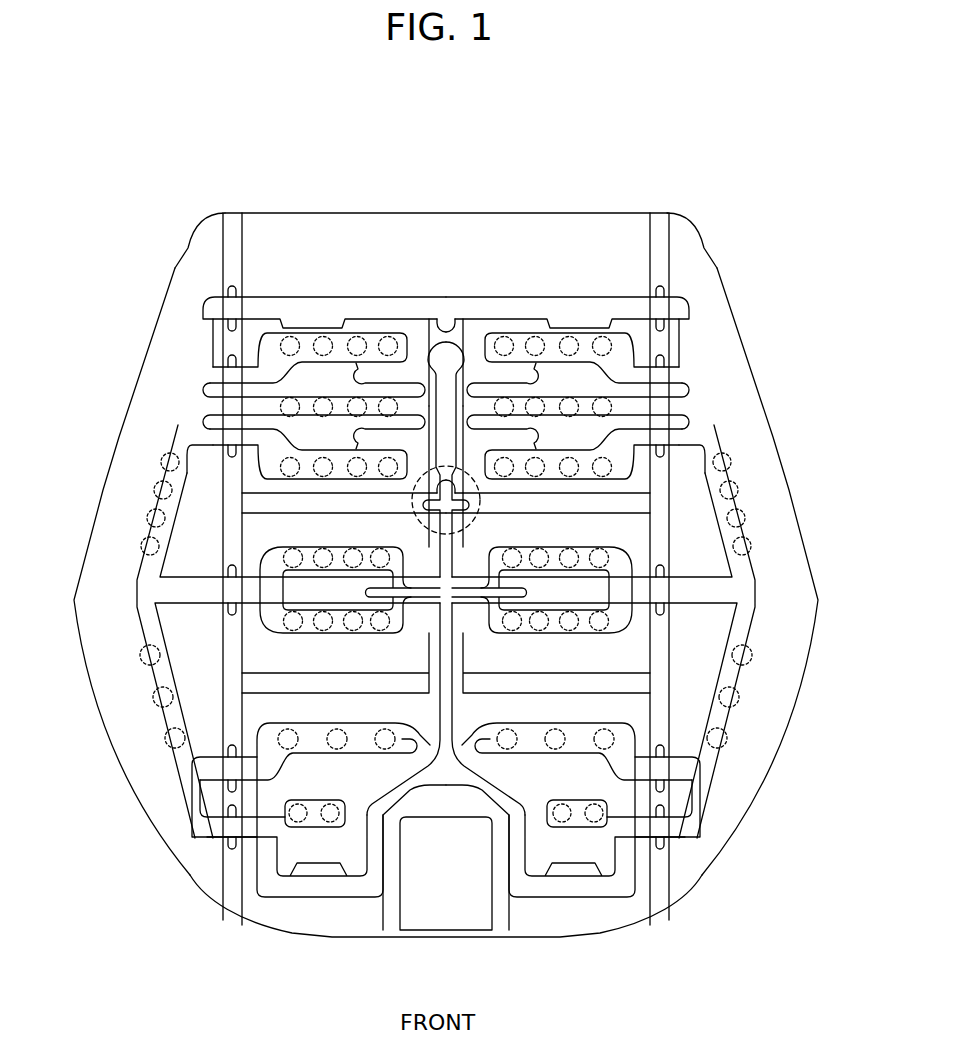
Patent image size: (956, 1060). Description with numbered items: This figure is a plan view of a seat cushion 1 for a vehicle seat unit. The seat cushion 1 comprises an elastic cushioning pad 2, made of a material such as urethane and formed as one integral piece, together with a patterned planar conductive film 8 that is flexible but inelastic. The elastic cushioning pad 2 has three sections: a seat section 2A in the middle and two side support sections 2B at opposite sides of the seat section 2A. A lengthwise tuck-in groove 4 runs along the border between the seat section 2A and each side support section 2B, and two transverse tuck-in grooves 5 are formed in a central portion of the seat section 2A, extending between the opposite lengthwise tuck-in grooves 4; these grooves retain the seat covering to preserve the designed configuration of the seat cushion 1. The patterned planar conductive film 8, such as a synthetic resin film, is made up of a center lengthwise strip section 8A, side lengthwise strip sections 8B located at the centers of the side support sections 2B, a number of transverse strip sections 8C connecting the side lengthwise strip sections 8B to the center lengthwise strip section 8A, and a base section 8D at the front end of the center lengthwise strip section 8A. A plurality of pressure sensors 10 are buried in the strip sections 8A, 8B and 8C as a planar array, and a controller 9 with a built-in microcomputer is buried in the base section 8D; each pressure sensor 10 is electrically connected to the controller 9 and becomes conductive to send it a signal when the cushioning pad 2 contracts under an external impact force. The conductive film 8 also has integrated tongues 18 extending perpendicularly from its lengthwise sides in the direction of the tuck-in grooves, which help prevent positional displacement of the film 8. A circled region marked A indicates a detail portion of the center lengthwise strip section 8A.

The seat cushion 1 is at (282, 165).
The elastic cushioning pad 2 is at (328, 938).
The seat section 2A is at (417, 213).
The side support section 2B is at (145, 412).
The lengthwise tuck-in groove 4 is at (226, 893).
The transverse tuck-in groove 5 is at (263, 503).
The patterned planar conductive film 8 is at (425, 297).
The center lengthwise strip section 8A is at (440, 650).
The side lengthwise strip section 8B is at (150, 677).
The transverse strip section 8C is at (365, 333).
The base section 8D is at (420, 937).
The controller 9 is at (465, 907).
The pressure sensor 10 is at (323, 336).
The integrated tongue 18 is at (228, 292).
The detail portion A is at (472, 512).